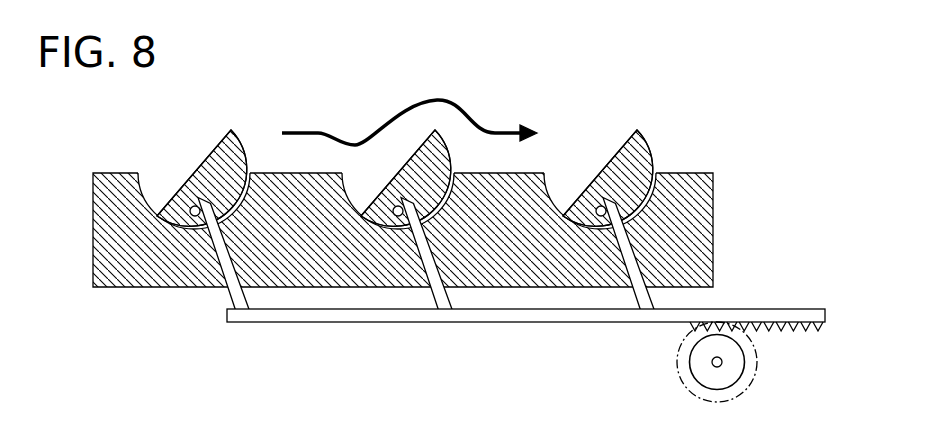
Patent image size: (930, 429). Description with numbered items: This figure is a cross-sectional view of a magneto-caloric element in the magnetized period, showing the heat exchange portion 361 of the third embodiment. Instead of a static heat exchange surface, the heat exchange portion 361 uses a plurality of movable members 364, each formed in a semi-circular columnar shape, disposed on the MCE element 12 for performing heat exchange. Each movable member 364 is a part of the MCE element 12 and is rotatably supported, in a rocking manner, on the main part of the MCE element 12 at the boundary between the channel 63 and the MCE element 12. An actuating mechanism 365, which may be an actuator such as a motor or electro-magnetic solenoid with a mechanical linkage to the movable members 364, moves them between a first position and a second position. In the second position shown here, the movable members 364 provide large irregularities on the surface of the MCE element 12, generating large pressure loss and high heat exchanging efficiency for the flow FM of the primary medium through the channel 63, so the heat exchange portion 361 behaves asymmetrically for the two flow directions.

The MCE element 12 is at (680, 173).
The heat exchange portion 361 is at (678, 135).
The movable member 364 is at (605, 210).
The actuating mechanism 365 is at (713, 310).
The channel 63 is at (593, 141).